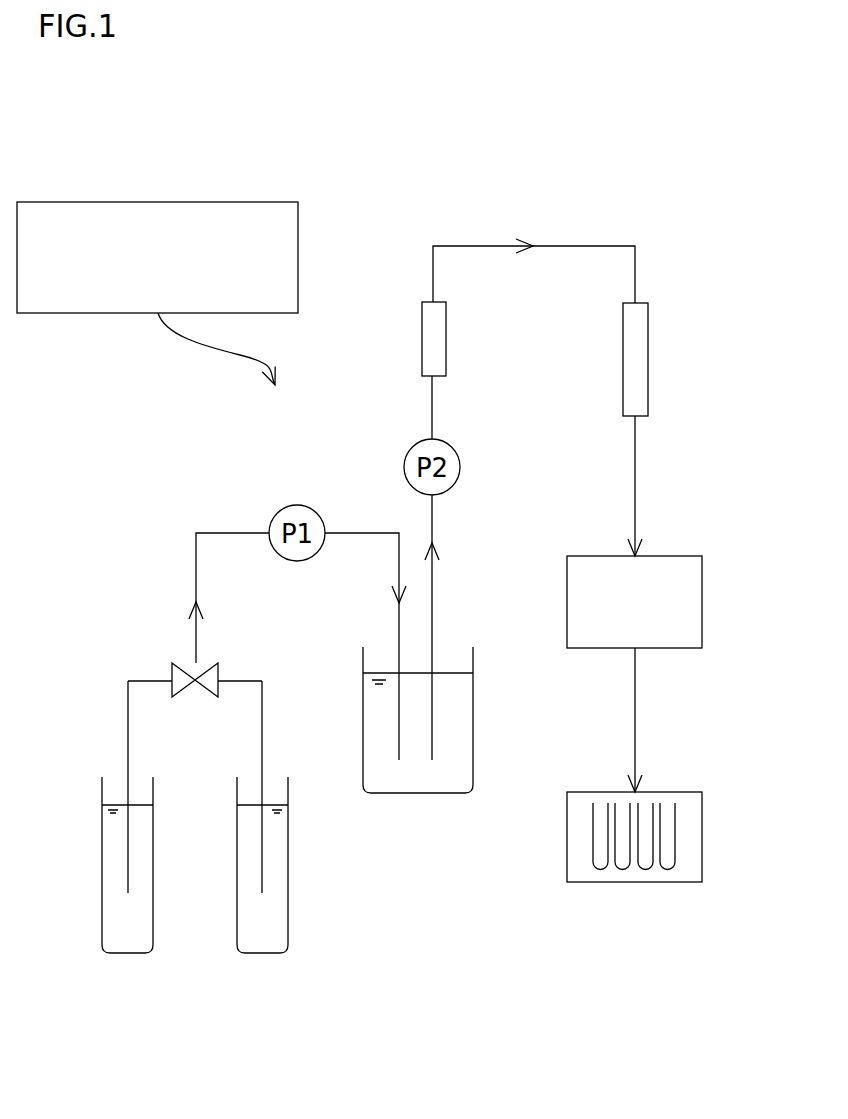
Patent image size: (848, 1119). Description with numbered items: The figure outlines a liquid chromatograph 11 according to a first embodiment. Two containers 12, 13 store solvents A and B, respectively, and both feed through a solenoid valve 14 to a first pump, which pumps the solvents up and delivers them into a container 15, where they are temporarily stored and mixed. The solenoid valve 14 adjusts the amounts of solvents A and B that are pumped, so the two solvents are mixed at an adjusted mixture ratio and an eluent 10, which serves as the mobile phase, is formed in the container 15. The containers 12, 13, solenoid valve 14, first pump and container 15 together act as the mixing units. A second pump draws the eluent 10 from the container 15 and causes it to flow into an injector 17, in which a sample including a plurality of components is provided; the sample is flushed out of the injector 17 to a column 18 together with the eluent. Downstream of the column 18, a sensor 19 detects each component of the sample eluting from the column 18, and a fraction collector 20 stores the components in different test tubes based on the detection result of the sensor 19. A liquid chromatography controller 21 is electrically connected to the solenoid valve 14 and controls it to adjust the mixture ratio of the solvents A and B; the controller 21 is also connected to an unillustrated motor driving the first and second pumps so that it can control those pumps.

The eluent 10 is at (457, 748).
The liquid chromatograph 11 is at (537, 195).
The container 12 is at (133, 953).
The container 13 is at (273, 953).
The solenoid valve 14 is at (172, 672).
The container 15 is at (430, 793).
The injector 17 is at (420, 340).
The column 18 is at (650, 322).
The sensor 19 is at (680, 556).
The fraction collector 20 is at (667, 883).
The liquid chromatography controller 21 is at (208, 202).